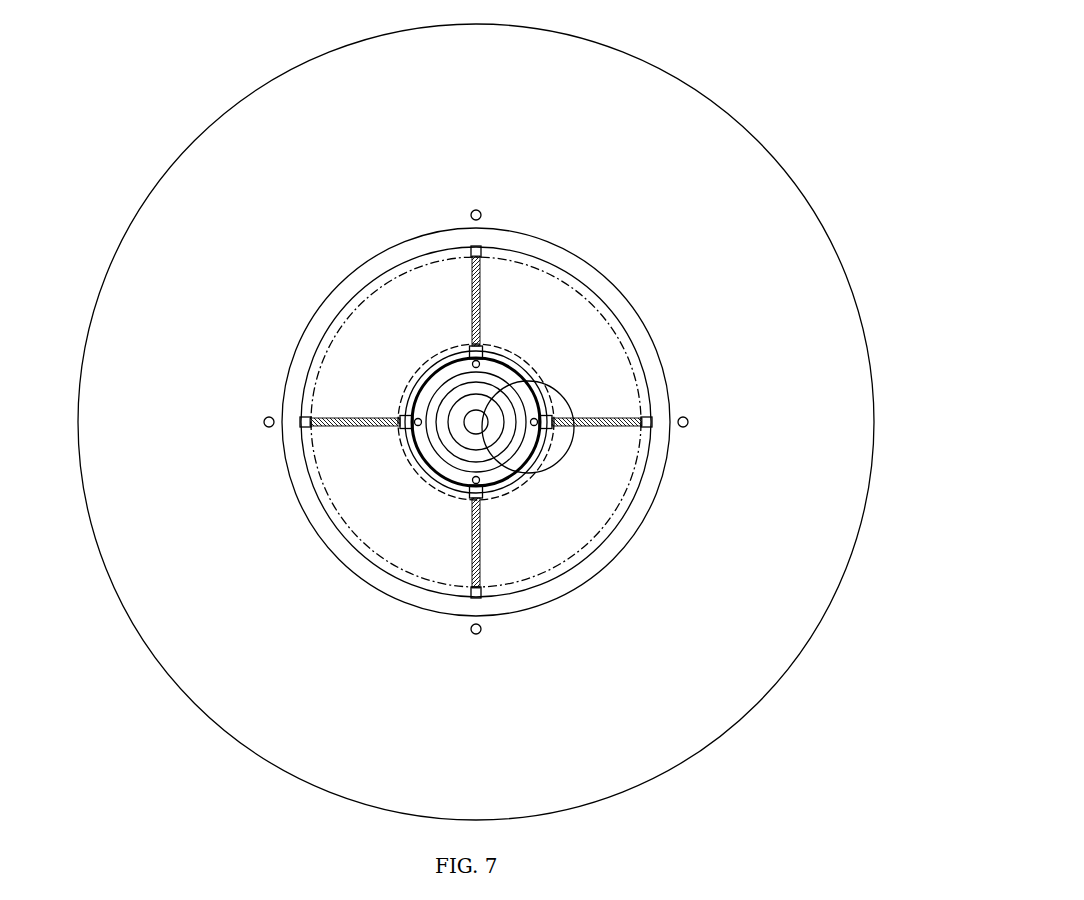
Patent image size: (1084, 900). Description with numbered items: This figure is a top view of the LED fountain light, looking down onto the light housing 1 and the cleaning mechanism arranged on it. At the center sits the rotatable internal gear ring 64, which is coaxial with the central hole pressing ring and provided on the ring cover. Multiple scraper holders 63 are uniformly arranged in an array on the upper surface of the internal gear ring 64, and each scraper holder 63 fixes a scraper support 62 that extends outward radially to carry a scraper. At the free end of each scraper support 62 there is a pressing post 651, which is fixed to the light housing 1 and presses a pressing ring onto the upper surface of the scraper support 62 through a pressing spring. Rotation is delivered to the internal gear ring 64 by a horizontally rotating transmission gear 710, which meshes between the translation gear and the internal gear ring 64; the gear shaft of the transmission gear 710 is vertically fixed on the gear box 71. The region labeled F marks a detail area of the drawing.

The light housing 1 is at (667, 117).
The pressing post 651 is at (610, 280).
The scraper support 62 is at (473, 283).
The scraper holder 63 is at (408, 424).
The internal gear ring 64 is at (413, 378).
The gear box 71 is at (466, 467).
The transmission gear 710 is at (487, 485).
The eccentric lobe F is at (492, 406).